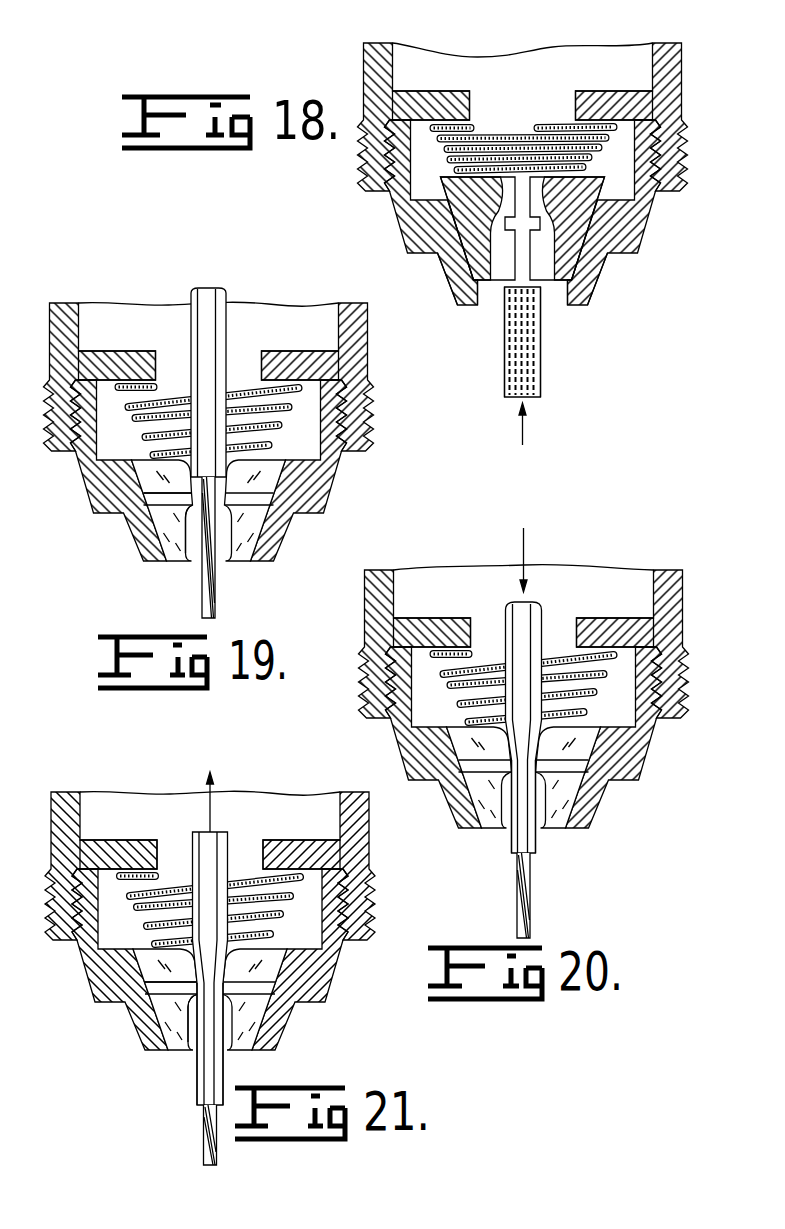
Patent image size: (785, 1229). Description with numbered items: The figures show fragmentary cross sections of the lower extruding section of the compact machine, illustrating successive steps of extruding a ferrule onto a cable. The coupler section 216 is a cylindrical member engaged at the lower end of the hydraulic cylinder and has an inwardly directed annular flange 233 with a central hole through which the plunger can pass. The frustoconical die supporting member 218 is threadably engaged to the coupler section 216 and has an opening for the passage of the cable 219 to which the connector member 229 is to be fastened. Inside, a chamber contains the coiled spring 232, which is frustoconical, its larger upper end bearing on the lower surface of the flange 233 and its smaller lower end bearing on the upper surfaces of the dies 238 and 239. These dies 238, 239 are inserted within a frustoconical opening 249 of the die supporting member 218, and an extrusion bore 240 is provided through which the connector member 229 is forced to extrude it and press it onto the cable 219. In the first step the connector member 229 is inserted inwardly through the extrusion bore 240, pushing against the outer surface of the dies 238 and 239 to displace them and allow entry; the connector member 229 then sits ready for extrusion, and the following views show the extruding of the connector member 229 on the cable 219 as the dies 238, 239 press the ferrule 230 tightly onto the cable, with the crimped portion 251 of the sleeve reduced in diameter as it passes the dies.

In FIG. 18, the coupler section 216 is at (523, 106).
In FIG. 19, the coupler section 216 is at (234, 376).
In FIG. 20, the coupler section 216 is at (524, 627).
In FIG. 21, the coupler section 216 is at (210, 850).
In FIG. 18, the die supporting member 218 is at (541, 212).
In FIG. 19, the die supporting member 218 is at (231, 470).
In FIG. 20, the die supporting member 218 is at (542, 737).
In FIG. 21, the die supporting member 218 is at (227, 959).
In FIG. 19, the cable 219 is at (241, 547).
In FIG. 20, the cable 219 is at (558, 895).
In FIG. 21, the cable 219 is at (174, 1135).
In FIG. 18, the connector member 229 is at (553, 342).
In FIG. 19, the connector member 229 is at (233, 372).
In FIG. 20, the connector member 229 is at (492, 719).
In FIG. 21, the connector member 229 is at (193, 950).
In FIG. 18, the ferrule 230 is at (553, 342).
In FIG. 18, the coiled spring 232 is at (524, 120).
In FIG. 19, the coiled spring 232 is at (209, 388).
In FIG. 20, the coiled spring 232 is at (524, 652).
In FIG. 21, the coiled spring 232 is at (210, 872).
In FIG. 18, the annular flange 233 is at (523, 89).
In FIG. 19, the annular flange 233 is at (209, 350).
In FIG. 20, the annular flange 233 is at (524, 609).
In FIG. 21, the annular flange 233 is at (210, 835).
In FIG. 18, the die 238 is at (500, 279).
In FIG. 18, the die 239 is at (613, 228).
In FIG. 19, the die 239 is at (191, 510).
In FIG. 20, the die 239 is at (527, 780).
In FIG. 21, the die 239 is at (193, 999).
In FIG. 18, the extrusion bore 240 is at (432, 228).
In FIG. 19, the extrusion bore 240 is at (145, 523).
In FIG. 21, the extrusion bore 240 is at (144, 1012).
In FIG. 18, the frustoconical opening 249 is at (511, 319).
In FIG. 20, the crimped sleeve portion 251 is at (490, 813).
In FIG. 21, the crimped sleeve portion 251 is at (172, 1044).